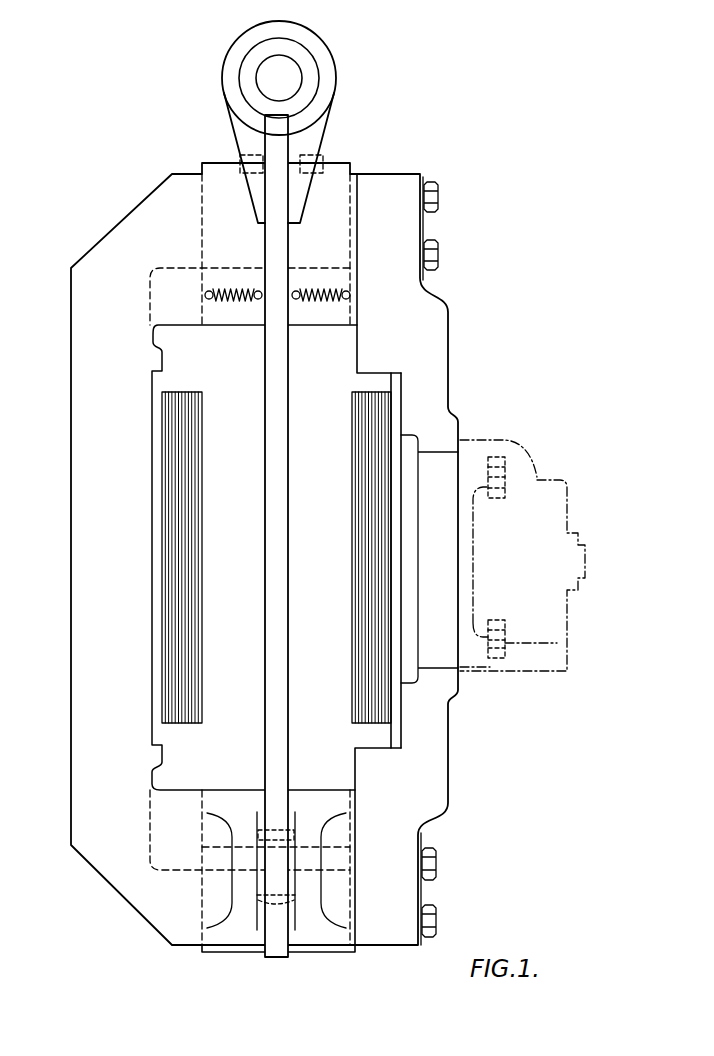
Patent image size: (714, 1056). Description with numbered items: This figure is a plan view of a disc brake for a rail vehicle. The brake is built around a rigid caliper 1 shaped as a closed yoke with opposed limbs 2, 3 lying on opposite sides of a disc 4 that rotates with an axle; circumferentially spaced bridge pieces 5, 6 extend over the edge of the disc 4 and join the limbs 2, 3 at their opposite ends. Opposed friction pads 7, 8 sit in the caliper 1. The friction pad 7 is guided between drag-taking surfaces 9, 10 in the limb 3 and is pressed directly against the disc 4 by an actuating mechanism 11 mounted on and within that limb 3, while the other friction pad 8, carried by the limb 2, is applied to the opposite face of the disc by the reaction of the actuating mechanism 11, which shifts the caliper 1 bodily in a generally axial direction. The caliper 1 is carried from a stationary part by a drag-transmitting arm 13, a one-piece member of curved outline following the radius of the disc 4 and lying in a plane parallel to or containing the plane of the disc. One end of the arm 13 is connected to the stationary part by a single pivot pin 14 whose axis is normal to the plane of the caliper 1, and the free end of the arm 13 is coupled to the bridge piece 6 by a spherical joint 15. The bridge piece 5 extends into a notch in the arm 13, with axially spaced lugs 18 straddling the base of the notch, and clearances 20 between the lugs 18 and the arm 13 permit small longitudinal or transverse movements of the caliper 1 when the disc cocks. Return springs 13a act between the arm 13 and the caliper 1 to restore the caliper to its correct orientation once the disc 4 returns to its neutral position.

The rigid caliper 1 is at (305, 508).
The limb 2 is at (97, 587).
The limb 3 is at (422, 703).
The disc 4 is at (235, 738).
The bridge piece 5 is at (331, 213).
The bridge piece 6 is at (312, 923).
The friction pad 7 is at (378, 430).
The friction pad 8 is at (185, 452).
The drag-taking surface 9 is at (377, 368).
The drag-taking surface 10 is at (378, 748).
The actuating mechanism 11 is at (550, 510).
The drag-transmitting arm 13 is at (277, 394).
The return springs 13a is at (242, 288).
The pivot pin 14 is at (268, 78).
The spherical joint 15 is at (273, 880).
The lugs 18 is at (247, 155).
The clearances 20 is at (262, 160).